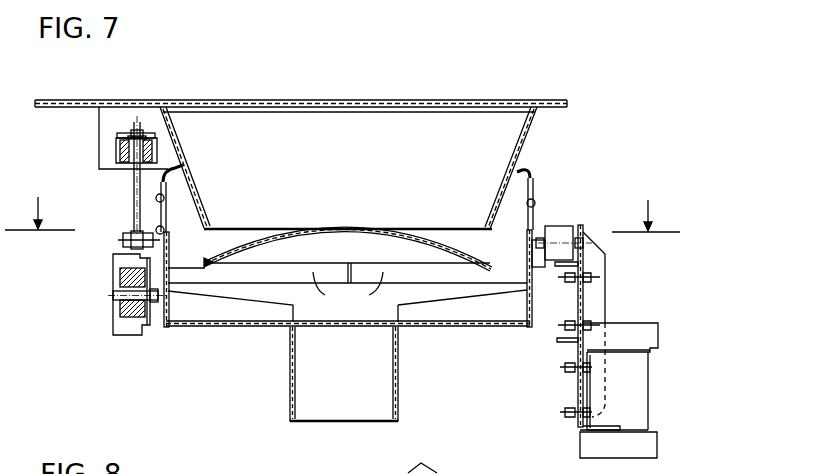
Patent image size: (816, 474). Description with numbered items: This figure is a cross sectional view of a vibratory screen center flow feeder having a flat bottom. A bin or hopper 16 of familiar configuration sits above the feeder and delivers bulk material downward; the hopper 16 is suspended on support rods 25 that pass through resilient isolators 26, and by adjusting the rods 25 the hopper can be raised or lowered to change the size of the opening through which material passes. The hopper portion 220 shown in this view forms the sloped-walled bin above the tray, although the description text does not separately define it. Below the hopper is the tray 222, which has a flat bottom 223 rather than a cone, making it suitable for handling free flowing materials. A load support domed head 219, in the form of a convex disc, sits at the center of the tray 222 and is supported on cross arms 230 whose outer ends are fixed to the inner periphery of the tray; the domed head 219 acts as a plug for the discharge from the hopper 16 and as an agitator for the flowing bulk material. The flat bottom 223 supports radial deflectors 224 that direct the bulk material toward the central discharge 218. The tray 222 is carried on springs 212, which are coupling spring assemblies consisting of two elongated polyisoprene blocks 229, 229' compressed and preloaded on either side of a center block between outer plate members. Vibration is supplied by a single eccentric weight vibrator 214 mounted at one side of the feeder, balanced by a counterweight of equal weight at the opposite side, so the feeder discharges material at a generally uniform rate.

The hopper 16 is at (342, 206).
The support rods 25 is at (133, 129).
The resilient isolators 26 is at (118, 150).
The springs 212 is at (113, 289).
The single eccentric weight vibrator 214 is at (637, 331).
The central discharge 218 is at (401, 397).
The load support domed head 219 is at (233, 251).
The hopper 220 is at (526, 139).
The tray 222 is at (520, 332).
The flat bottom 223 is at (445, 330).
The radial deflectors 224 is at (347, 295).
The polyisoprene block 229 is at (100, 316).
The polyisoprene block 229' is at (99, 273).
The cross arms 230 is at (348, 285).